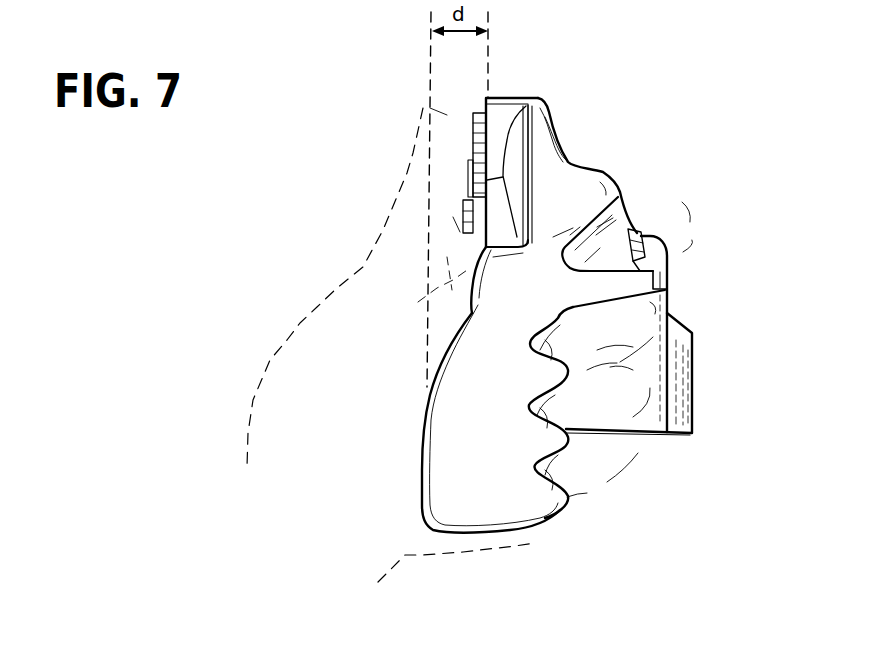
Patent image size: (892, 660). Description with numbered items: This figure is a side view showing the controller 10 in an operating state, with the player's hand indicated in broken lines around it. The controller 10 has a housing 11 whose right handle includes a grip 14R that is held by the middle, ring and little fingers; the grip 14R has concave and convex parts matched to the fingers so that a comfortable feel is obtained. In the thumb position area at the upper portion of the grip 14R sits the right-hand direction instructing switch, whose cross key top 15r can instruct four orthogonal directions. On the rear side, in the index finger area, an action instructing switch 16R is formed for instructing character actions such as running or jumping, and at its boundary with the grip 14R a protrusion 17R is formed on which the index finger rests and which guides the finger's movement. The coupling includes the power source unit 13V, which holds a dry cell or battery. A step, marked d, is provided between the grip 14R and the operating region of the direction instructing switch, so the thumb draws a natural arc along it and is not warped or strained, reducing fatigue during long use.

The controller 10 is at (589, 98).
The housing 11 is at (563, 172).
The cross key top 15r is at (476, 117).
The action instructing switch 16R is at (640, 230).
The protrusion 17R is at (655, 281).
The power source unit 13V is at (652, 366).
The grip 14R is at (488, 458).